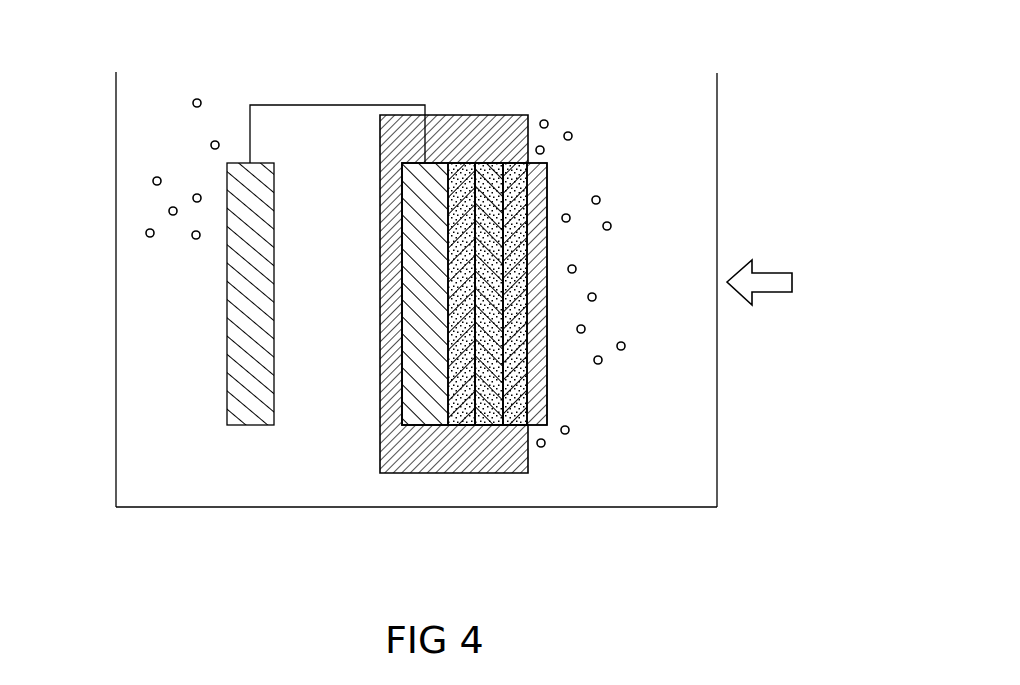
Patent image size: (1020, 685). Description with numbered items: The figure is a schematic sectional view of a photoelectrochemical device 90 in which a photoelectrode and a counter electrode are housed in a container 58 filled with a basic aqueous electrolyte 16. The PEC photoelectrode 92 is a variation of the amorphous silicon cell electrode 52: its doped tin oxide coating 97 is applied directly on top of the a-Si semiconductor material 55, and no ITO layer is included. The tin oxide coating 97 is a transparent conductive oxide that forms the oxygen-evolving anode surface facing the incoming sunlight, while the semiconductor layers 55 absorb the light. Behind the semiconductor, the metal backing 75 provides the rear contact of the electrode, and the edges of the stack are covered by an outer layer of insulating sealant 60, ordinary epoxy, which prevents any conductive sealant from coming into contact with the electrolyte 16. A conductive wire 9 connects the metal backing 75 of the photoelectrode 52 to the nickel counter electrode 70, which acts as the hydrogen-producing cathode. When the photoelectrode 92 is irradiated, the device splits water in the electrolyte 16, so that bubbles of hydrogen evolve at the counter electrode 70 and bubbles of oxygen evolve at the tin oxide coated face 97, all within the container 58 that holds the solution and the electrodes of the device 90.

The conductive wire 9 is at (326, 103).
The electrolyte 16 is at (343, 303).
The photoelectrode 52 is at (567, 502).
The a-Si semiconductor material 55 is at (513, 412).
The container 58 is at (116, 177).
The insulating sealant 60 is at (380, 460).
The counter electrode 70 is at (228, 342).
The metal backing 75 is at (428, 412).
The photoelectrochemical device 90 is at (762, 100).
The PEC photoelectrode 92 is at (558, 408).
The doped tin oxide coating 97 is at (547, 173).